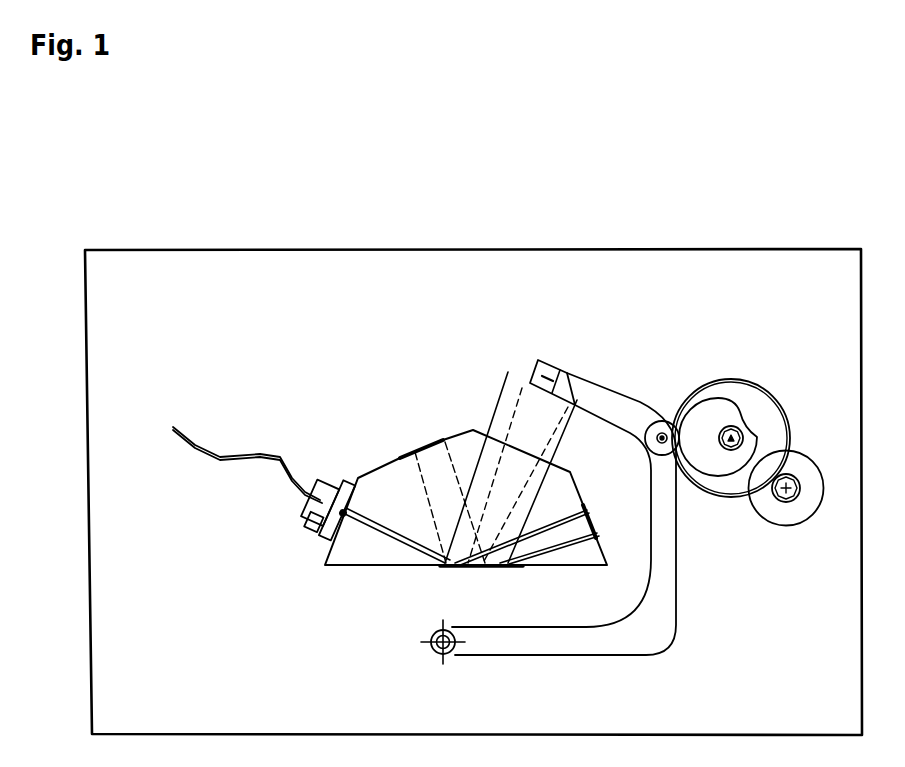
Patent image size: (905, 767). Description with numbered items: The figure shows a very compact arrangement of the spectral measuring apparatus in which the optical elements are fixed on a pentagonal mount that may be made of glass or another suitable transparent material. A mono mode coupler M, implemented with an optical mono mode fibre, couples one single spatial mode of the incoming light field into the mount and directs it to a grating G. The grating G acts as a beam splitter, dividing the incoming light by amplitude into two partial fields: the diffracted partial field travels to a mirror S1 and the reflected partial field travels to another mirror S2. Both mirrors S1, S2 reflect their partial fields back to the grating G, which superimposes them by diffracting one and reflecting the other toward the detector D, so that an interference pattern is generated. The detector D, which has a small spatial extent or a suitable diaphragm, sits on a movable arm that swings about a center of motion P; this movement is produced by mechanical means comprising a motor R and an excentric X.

The detector D is at (552, 371).
The excentric X is at (717, 426).
The mirror S1 is at (442, 489).
The mirror S2 is at (538, 528).
The mono mode coupler M is at (311, 495).
The grating G is at (481, 580).
The motor R is at (790, 497).
The center of motion P is at (438, 653).